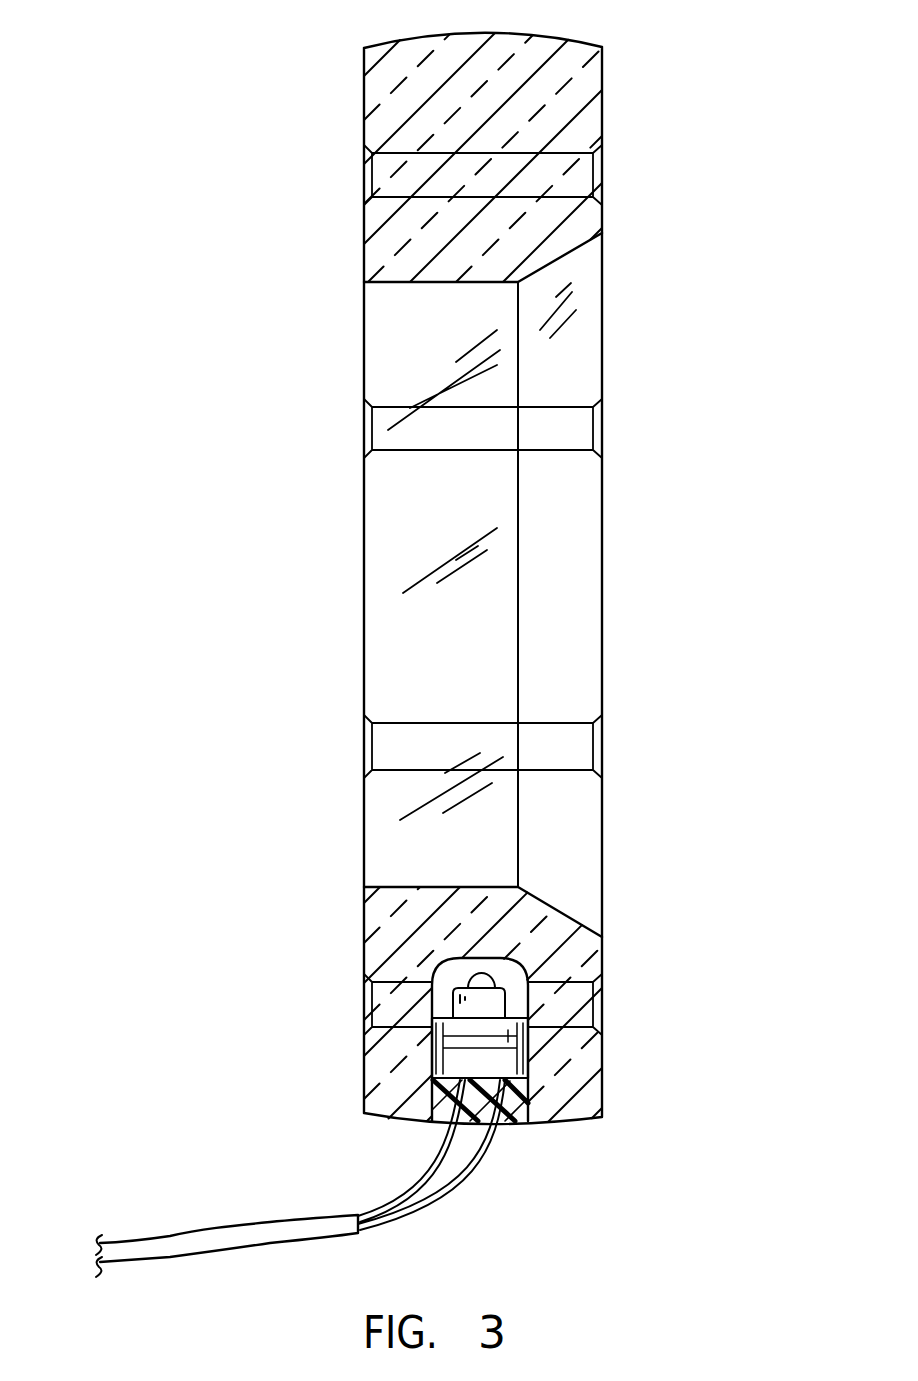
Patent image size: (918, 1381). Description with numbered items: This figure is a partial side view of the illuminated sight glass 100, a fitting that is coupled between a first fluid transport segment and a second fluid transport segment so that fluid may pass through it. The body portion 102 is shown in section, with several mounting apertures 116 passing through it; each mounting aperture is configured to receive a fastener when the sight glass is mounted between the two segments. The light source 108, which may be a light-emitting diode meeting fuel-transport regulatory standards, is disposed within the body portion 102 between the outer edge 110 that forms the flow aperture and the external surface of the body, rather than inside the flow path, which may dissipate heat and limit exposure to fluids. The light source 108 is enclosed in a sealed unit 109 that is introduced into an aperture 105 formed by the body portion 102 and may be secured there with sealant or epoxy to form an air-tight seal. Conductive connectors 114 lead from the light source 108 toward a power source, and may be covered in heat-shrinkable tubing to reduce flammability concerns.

The illuminated sight glass 100 is at (244, 168).
The body portion 102 is at (425, 35).
The mounting apertures 116 is at (602, 170).
The outer edge 110 is at (520, 887).
The sealed unit 109 is at (528, 975).
The light source 108 is at (470, 1008).
The aperture 105 is at (553, 1125).
The conductive connectors 114 is at (450, 1158).